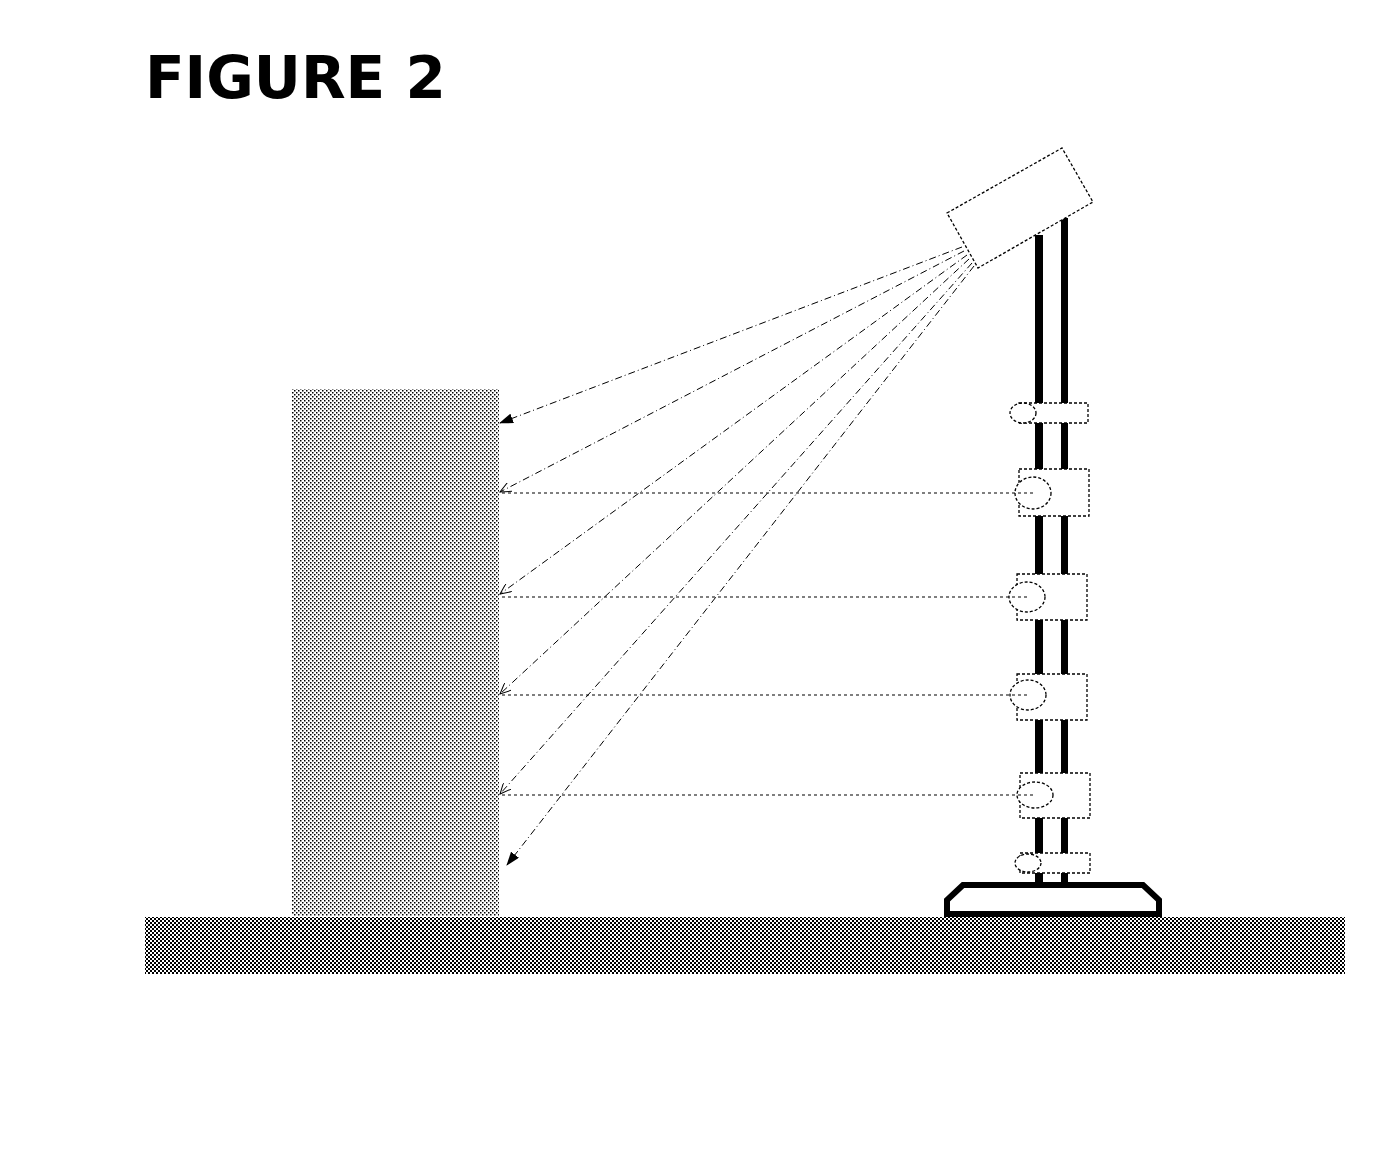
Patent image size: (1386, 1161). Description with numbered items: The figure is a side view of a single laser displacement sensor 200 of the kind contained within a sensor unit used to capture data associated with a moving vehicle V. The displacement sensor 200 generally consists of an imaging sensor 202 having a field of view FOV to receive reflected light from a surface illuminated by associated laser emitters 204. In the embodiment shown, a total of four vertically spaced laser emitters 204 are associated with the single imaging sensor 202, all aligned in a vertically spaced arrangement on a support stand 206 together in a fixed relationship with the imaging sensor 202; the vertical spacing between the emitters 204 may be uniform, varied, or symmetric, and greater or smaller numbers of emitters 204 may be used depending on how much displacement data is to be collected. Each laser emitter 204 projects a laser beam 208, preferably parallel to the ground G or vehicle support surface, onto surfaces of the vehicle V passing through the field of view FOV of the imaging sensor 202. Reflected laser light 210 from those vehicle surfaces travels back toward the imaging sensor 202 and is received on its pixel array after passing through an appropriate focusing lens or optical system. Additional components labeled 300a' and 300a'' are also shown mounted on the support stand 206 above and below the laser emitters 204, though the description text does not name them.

The laser displacement sensor 200 is at (1037, 504).
The imaging sensor 202 is at (1000, 170).
The laser emitter 204 is at (1095, 490).
The support stand 206 is at (1072, 355).
The laser beam 208 is at (842, 492).
The reflected laser light 210 is at (915, 308).
The upper sensor 300a' is at (1147, 374).
The lower sensor 300a'' is at (1153, 825).
The vehicle V is at (330, 550).
The ground G is at (237, 930).
The field of view FOV is at (594, 382).